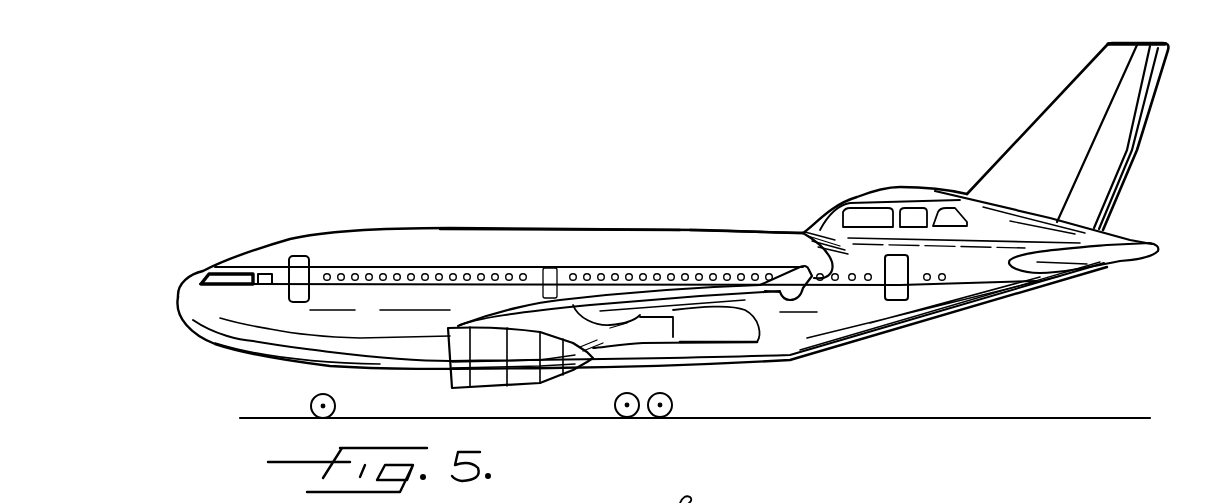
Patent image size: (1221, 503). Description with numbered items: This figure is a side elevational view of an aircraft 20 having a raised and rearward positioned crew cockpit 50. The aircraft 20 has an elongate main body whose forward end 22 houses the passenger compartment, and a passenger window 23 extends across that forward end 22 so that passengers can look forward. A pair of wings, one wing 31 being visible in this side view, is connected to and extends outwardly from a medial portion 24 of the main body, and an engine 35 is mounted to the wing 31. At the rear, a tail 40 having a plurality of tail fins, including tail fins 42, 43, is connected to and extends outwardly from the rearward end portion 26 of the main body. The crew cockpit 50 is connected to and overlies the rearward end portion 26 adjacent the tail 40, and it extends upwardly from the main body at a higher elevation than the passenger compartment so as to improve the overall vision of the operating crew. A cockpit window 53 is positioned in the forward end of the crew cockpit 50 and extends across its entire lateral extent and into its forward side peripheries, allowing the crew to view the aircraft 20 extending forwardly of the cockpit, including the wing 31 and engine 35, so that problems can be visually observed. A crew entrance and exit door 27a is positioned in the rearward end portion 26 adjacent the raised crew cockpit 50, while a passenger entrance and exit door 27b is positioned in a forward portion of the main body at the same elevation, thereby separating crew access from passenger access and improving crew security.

The aircraft 20 is at (766, 104).
The forward end 22 is at (250, 248).
The passenger window 23 is at (204, 275).
The medial portion 24 is at (680, 222).
The rearward end portion 26 is at (703, 233).
The aircraft crew entrance and exit door 27a is at (897, 293).
The passenger entrance and exit door 27b is at (302, 258).
The wing 31 is at (633, 307).
The engine 35 is at (449, 380).
The tail 40 is at (1118, 212).
The tail fin 42 is at (1097, 267).
The tail fin 43 is at (1063, 162).
The crew cockpit 50 is at (918, 160).
The cockpit window 53 is at (843, 203).